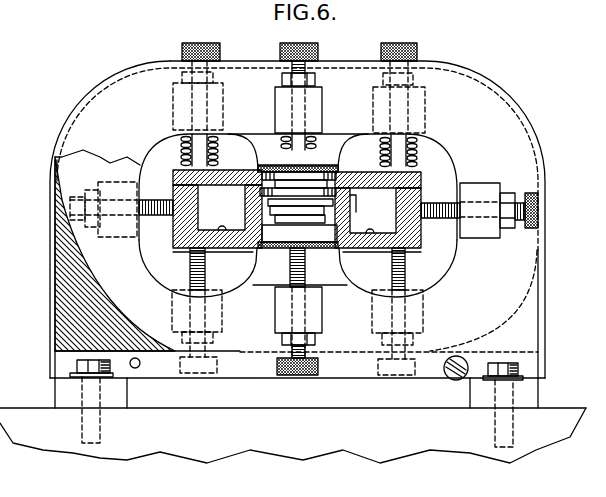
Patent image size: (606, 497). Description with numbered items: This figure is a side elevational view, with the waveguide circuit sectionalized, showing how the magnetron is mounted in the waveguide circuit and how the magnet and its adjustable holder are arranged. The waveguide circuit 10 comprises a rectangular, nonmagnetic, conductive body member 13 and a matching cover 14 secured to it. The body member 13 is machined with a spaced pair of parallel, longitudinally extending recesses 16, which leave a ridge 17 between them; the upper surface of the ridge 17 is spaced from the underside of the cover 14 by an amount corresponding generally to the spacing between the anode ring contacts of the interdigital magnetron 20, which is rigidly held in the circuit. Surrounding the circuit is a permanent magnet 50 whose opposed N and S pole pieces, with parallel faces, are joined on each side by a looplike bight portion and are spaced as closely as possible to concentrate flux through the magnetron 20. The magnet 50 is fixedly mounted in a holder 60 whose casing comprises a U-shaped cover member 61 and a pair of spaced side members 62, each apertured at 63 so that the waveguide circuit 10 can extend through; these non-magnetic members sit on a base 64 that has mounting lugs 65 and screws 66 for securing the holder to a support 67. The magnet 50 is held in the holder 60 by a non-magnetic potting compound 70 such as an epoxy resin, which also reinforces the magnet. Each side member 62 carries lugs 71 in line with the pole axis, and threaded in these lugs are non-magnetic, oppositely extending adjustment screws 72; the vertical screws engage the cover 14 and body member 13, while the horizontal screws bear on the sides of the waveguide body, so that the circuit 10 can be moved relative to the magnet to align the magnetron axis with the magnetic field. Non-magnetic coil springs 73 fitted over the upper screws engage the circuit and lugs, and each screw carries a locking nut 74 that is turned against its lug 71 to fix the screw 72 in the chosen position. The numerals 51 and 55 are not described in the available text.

The waveguide circuit 10 is at (170, 178).
The body member 13 is at (421, 250).
The cover 14 is at (420, 178).
The recesses 16 is at (227, 232).
The ridge 17 is at (351, 206).
The interdigital magnetron 20 is at (265, 192).
The magnet 50 is at (120, 278).
The pointer 51 is at (211, 5).
The dial cover 55 is at (530, 292).
The holder 60 is at (467, 64).
The U-shaped cover member 61 is at (520, 110).
The side members 62 is at (97, 100).
The aperture 63 is at (177, 283).
The base 64 is at (326, 380).
The mounting lugs 65 is at (58, 386).
The screws 66 is at (78, 366).
The support 67 is at (322, 440).
The potting compound 70 is at (73, 305).
The lugs 71 is at (176, 108).
The adjustment screws 72 is at (292, 66).
The coil springs 73 is at (212, 163).
The locking nut 74 is at (318, 79).